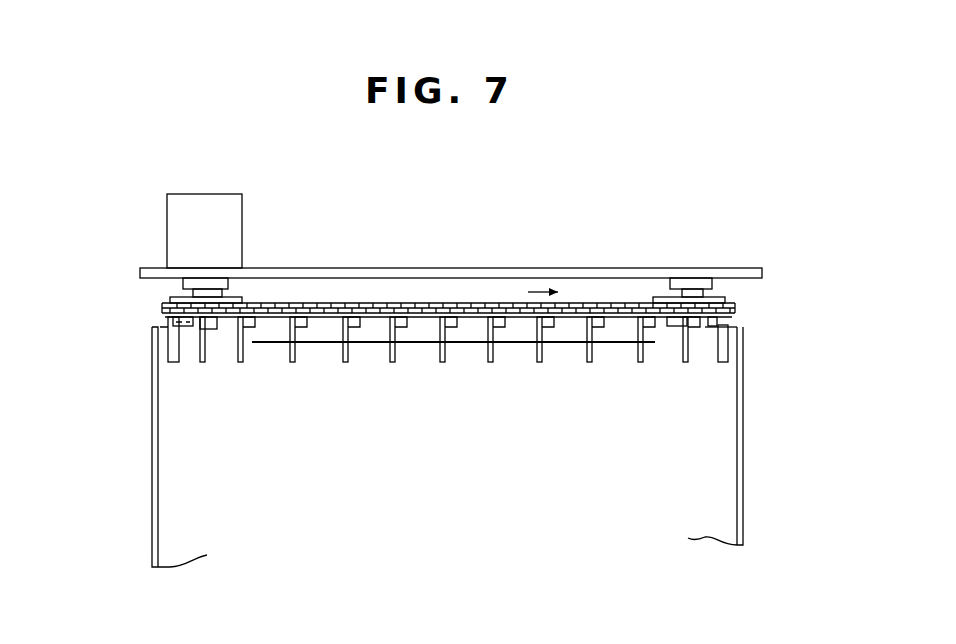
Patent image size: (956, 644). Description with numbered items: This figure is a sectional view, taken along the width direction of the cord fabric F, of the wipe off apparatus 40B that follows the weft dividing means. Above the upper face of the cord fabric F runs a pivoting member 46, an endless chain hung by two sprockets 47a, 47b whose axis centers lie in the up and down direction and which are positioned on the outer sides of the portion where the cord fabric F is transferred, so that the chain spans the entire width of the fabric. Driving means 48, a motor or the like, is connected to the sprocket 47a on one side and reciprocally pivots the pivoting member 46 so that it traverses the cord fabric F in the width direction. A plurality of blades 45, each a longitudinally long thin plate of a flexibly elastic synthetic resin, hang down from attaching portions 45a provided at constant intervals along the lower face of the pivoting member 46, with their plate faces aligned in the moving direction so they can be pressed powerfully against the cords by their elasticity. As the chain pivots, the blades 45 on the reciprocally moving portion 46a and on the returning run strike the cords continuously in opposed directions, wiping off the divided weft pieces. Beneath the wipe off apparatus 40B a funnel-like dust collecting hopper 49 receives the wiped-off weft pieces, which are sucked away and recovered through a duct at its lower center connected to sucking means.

The wipe off apparatus 40B is at (735, 215).
The blade 45 is at (243, 363).
The attaching portion 45a is at (303, 322).
The pivoting member 46 is at (462, 301).
The reciprocally moving portion 46a is at (610, 302).
The sprocket 47a is at (173, 300).
The sprocket 47b is at (660, 296).
The driving means 48 is at (198, 213).
The dust collecting hopper 49 is at (152, 470).
The cord fabric F is at (413, 346).